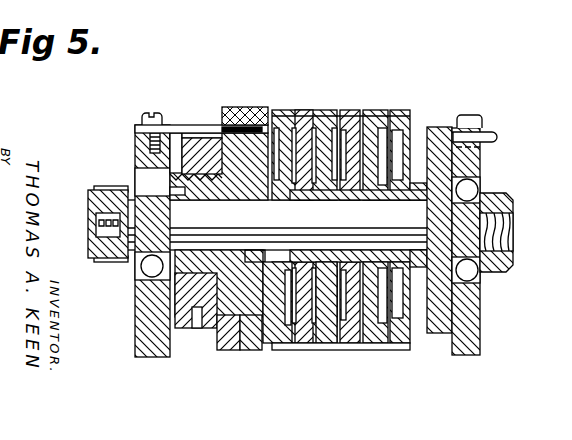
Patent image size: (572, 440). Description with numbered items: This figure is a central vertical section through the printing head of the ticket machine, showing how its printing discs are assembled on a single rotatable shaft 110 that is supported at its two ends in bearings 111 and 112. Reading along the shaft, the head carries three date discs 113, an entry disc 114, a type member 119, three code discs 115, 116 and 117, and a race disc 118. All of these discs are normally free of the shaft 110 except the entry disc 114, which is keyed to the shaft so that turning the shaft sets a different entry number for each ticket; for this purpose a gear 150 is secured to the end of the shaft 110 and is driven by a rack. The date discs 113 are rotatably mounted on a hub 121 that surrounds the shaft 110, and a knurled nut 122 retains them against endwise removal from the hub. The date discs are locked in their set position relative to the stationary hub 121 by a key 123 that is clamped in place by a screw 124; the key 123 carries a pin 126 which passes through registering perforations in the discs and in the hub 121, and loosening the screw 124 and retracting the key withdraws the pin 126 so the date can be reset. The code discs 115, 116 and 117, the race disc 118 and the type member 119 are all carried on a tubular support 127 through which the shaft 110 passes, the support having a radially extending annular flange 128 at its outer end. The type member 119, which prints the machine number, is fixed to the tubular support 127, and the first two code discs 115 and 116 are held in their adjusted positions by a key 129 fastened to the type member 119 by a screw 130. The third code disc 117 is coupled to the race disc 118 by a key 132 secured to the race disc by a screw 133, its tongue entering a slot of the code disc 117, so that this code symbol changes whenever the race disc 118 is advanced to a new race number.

The shaft 110 is at (297, 226).
The bearing 111 is at (140, 270).
The bearing 112 is at (473, 191).
The date discs 113 is at (229, 106).
The entry disc 114 is at (278, 109).
The code disc 115 is at (348, 109).
The code disc 116 is at (352, 109).
The code disc 117 is at (378, 110).
The race disc 118 is at (405, 111).
The type member 119 is at (305, 109).
The hub 121 is at (250, 263).
The knurled nut 122 is at (187, 330).
The key 123 is at (222, 124).
The screw 124 is at (146, 116).
The pin 126 is at (218, 135).
The tubular support 127 is at (368, 199).
The annular flange 128 is at (440, 330).
The key 129 is at (330, 350).
The screw 130 is at (300, 350).
The key 132 is at (366, 350).
The screw 133 is at (400, 348).
The gear 150 is at (118, 190).